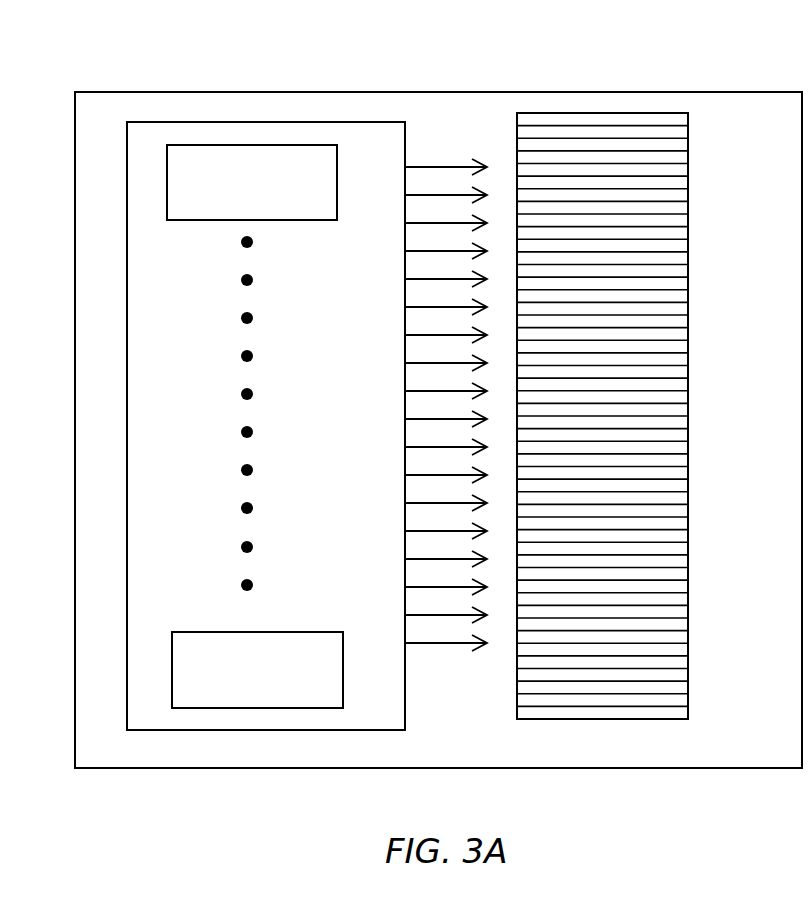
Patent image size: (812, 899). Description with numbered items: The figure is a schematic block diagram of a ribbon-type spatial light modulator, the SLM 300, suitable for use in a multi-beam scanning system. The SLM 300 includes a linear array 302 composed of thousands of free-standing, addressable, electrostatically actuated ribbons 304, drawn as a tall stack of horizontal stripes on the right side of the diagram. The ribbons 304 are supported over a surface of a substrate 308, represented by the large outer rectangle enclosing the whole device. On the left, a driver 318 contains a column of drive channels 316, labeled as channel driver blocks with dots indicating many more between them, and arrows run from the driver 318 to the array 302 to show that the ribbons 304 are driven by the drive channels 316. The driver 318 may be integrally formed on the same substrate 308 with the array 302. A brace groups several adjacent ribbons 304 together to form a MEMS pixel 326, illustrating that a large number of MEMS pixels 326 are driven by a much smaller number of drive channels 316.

The spatial light modulator 300 is at (146, 58).
The linear array 302 is at (618, 385).
The ribbons 304 is at (517, 121).
The substrate 308 is at (763, 747).
The drive channel 316 is at (242, 145).
The driver 318 is at (330, 527).
The MEMS pixels 326 is at (688, 191).